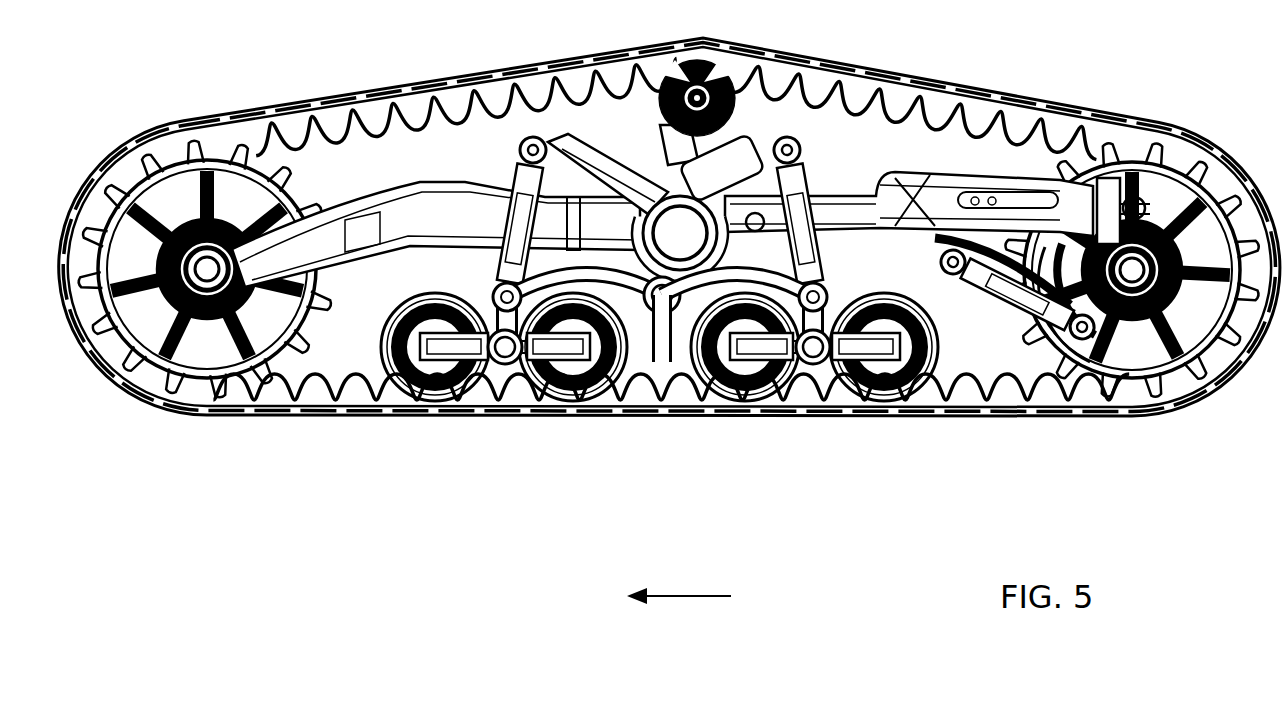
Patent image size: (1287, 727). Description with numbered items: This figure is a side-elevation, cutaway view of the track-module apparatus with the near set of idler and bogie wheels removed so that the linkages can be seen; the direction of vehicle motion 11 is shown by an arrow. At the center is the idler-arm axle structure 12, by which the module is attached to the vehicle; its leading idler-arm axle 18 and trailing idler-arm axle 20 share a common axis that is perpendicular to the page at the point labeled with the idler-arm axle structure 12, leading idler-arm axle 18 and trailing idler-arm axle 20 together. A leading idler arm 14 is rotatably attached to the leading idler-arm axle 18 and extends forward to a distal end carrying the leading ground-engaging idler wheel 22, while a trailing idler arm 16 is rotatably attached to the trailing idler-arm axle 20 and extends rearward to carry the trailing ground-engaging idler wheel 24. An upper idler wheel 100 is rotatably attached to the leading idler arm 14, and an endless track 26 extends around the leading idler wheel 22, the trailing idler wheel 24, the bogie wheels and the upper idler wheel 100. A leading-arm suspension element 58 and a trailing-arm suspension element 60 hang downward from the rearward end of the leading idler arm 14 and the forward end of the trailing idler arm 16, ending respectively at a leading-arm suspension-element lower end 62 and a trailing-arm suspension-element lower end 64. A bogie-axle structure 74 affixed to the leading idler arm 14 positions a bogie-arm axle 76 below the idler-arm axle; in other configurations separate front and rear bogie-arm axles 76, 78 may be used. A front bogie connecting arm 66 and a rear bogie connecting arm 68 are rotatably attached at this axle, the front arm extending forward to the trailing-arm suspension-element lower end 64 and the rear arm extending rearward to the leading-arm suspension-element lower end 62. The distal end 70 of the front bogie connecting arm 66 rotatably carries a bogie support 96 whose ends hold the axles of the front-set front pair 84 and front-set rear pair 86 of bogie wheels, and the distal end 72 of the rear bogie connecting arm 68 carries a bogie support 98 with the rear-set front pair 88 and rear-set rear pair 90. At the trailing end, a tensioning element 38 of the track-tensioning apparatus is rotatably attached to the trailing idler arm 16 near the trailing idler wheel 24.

The direction of vehicle motion 11 is at (674, 596).
The idler-arm axle structure 12 is at (625, 145).
The leading idler arm 14 is at (413, 235).
The trailing idler arm 16 is at (853, 224).
The leading idler-arm axle 18 is at (625, 145).
The trailing idler-arm axle 20 is at (680, 233).
The leading ground-engaging idler wheel 22 is at (205, 170).
The trailing ground-engaging idler wheel 24 is at (1196, 215).
The endless track 26 is at (410, 107).
The tensioning element 38 is at (986, 284).
The leading-arm suspension element 58 is at (800, 192).
The trailing-arm suspension element 60 is at (522, 192).
The leading-arm suspension-element lower end 62 is at (827, 290).
The trailing-arm suspension-element lower end 64 is at (497, 294).
The front bogie connecting arm 66 is at (530, 300).
The rear bogie connecting arm 68 is at (792, 293).
The distal end of front bogie connecting arm 70 is at (505, 352).
The distal end of rear bogie connecting arm 72 is at (813, 352).
The bogie-axle structure 74 is at (574, 407).
The bogie-arm axle 76 is at (574, 407).
The rear bogie-arm axle 78 is at (658, 305).
The front-set front pair of bogie wheels 84 is at (437, 305).
The front-set rear pair of bogie wheels 86 is at (580, 392).
The rear-set front pair of bogie wheels 88 is at (742, 392).
The rear-set rear pair of bogie wheels 90 is at (873, 297).
The bogie support 96 is at (470, 352).
The bogie support 98 is at (847, 352).
The upper idler wheel 100 is at (718, 68).